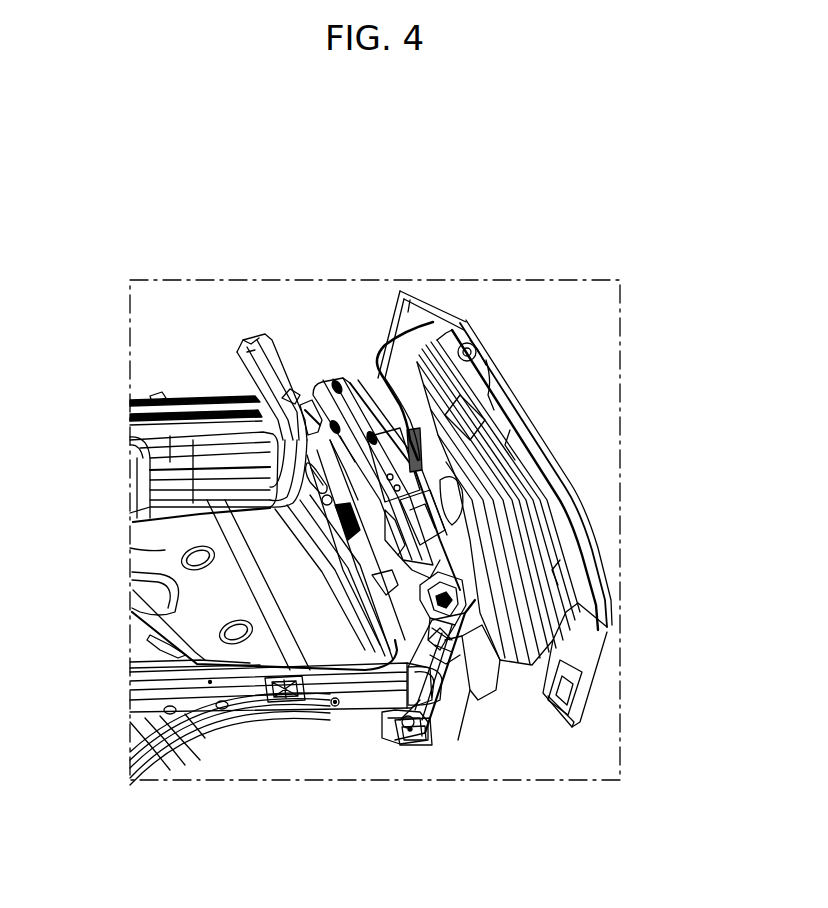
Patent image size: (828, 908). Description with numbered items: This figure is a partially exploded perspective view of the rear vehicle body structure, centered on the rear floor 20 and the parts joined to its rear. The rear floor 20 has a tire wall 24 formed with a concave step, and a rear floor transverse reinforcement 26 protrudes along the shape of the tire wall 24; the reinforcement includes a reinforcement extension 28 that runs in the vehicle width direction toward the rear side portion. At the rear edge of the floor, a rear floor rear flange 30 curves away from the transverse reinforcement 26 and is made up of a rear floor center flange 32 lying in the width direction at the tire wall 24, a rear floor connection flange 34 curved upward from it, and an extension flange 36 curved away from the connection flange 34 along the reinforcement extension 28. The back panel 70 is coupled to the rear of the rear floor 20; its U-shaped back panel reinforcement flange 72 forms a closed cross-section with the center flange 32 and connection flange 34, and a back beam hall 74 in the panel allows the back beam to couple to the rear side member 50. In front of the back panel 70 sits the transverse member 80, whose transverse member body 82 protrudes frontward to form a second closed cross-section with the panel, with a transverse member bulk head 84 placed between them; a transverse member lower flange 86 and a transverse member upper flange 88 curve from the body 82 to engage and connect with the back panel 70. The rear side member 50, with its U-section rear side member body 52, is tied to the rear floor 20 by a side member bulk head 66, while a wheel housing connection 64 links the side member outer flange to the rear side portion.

The rear floor 20 is at (182, 392).
The tire wall 24 is at (160, 553).
The rear floor transverse reinforcement 26 is at (378, 587).
The reinforcement extension 28 is at (268, 334).
The rear floor rear flange 30 is at (504, 833).
The rear floor center flange 32 is at (473, 620).
The rear floor connection flange 34 is at (413, 740).
The extension flange 36 is at (458, 633).
The rear side member 50 is at (338, 716).
The rear side member body 52 is at (308, 703).
The wheel housing connection 64 is at (390, 728).
The side member bulk head 66 is at (290, 700).
The back panel 70 is at (607, 632).
The back panel reinforcement flange 72 is at (557, 600).
The back beam hall 74 is at (568, 684).
The transverse member 80 is at (330, 372).
The transverse member body 82 is at (351, 417).
The transverse member bulk head 84 is at (462, 600).
The transverse member lower flange 86 is at (303, 414).
The transverse member upper flange 88 is at (433, 322).